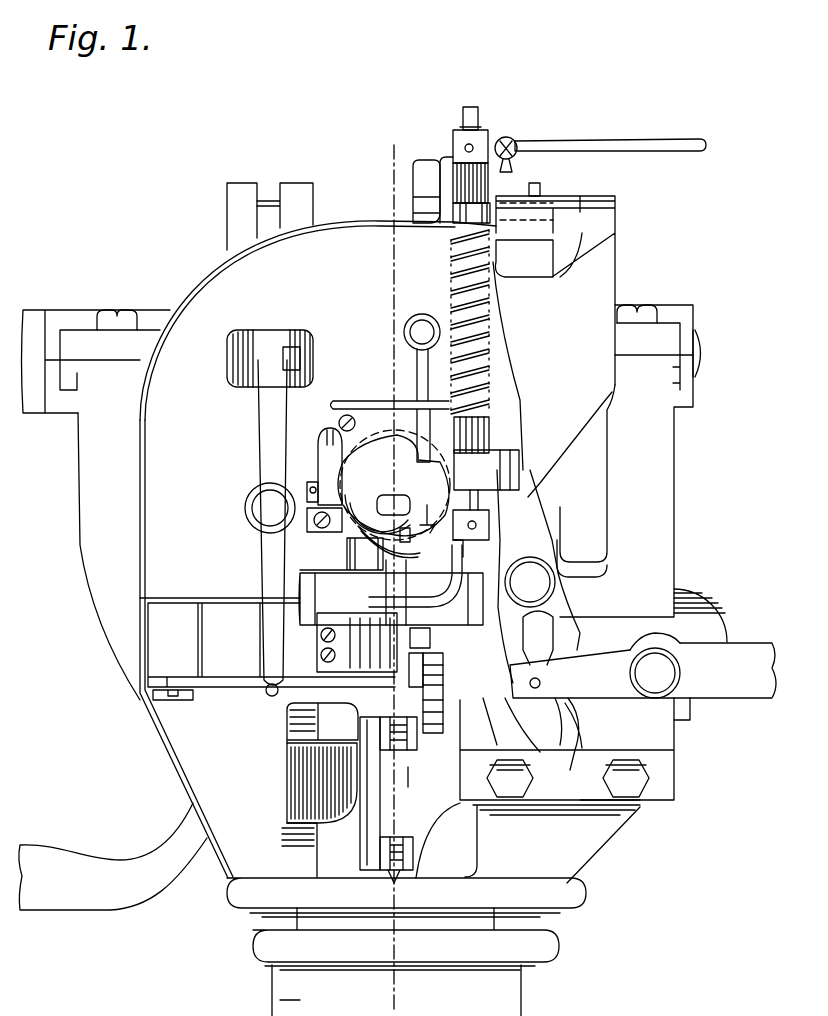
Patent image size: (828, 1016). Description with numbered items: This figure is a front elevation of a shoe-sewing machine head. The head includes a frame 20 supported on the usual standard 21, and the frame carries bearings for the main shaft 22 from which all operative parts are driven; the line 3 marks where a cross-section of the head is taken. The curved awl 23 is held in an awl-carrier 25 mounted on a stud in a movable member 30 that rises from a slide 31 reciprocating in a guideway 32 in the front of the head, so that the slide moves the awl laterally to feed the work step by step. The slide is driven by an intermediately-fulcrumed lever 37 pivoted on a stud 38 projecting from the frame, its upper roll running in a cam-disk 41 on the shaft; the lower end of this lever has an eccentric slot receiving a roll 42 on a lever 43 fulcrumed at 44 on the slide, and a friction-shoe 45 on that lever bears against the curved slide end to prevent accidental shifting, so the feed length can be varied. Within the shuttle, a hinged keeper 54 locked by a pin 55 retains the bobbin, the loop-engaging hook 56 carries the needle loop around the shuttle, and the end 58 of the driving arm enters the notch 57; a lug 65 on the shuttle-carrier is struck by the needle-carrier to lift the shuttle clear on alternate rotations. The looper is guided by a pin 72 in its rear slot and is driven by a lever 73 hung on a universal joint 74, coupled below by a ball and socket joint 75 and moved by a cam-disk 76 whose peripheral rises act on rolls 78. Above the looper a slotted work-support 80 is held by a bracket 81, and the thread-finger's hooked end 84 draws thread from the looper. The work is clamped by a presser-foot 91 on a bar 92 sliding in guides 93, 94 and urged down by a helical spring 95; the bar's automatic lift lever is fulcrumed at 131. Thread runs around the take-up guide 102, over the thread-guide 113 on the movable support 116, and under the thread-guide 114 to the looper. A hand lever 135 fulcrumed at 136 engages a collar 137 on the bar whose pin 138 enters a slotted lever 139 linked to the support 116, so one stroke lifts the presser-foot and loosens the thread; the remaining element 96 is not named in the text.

The section line 3 is at (393, 564).
The frame 20 is at (163, 500).
The standard 21 is at (507, 995).
The main shaft 22 is at (703, 348).
The awl 23 is at (418, 582).
The awl-carrier 25 is at (416, 633).
The movable member 30 is at (453, 740).
The slide 31 is at (653, 730).
The guideway 32 is at (647, 753).
The intermediately-fulcrumed lever 37 is at (540, 503).
The stud 38 is at (540, 583).
The cam-disk 41 is at (540, 193).
The roll 42 is at (550, 657).
The lever 43 is at (607, 699).
The fulcrum 44 is at (662, 673).
The friction-shoe 45 is at (720, 630).
The keeper 54 is at (341, 473).
The pin 55 is at (420, 366).
The loop-engaging hook 56 is at (405, 547).
The notch 57 is at (431, 503).
The end of shuttle-driving arm 58 is at (394, 485).
The lug 65 is at (347, 550).
The pin 72 is at (182, 701).
The lever 73 is at (268, 570).
The universal joint 74 is at (267, 198).
The ball and socket joint 75 is at (270, 696).
The cam-disk 76 is at (257, 203).
The rolls 78 is at (272, 360).
The work-support 80 is at (328, 613).
The bracket 81 is at (317, 641).
The hooked end 84 is at (317, 627).
The presser-foot 91 is at (456, 572).
The presser-foot bar 92 is at (478, 130).
The guide 93 is at (486, 467).
The guide 94 is at (453, 218).
The helical spring 95 is at (495, 327).
The spring seat 96 is at (489, 427).
The thread-guide 102 is at (400, 850).
The thread-guide 113 is at (432, 697).
The thread-guide 114 is at (418, 791).
The movable support 116 is at (432, 677).
The fulcrum 131 is at (565, 205).
The lever 135 is at (553, 140).
The fulcrum 136 is at (508, 142).
The collar 137 is at (456, 150).
The pin 138 is at (423, 197).
The lever 139 is at (440, 162).